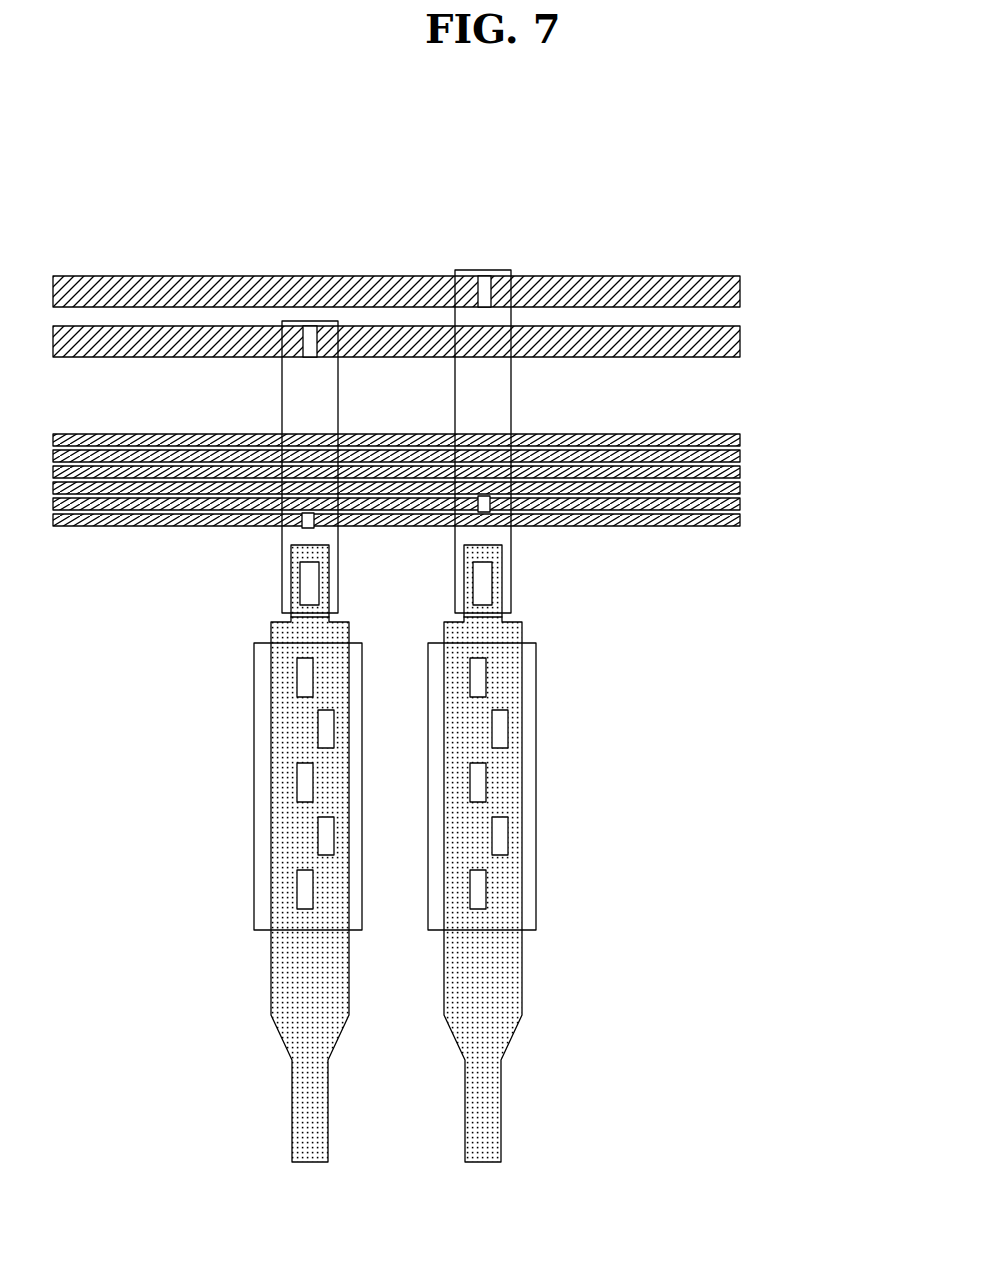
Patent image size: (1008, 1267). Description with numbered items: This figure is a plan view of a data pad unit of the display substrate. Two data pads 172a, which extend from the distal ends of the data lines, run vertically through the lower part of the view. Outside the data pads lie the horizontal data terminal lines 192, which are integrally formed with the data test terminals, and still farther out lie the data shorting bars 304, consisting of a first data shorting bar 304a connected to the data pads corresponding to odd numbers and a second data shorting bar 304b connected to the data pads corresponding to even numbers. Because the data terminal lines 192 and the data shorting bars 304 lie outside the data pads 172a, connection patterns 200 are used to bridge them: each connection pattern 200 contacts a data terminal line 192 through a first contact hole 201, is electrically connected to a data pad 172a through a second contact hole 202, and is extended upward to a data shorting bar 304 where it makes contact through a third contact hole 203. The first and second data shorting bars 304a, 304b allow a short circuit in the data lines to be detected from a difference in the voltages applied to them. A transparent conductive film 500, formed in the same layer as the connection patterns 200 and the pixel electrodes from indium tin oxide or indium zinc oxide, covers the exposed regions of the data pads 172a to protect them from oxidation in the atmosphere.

The data pad 172a is at (458, 1013).
The data terminal line 192 is at (680, 528).
The connection pattern 200 is at (333, 559).
The first contact hole 201 is at (479, 505).
The second contact hole 202 is at (480, 587).
The third contact hole 203 is at (310, 334).
The data shorting bar 304 is at (485, 317).
The first data shorting bar 304a is at (742, 340).
The second data shorting bar 304b is at (742, 290).
The transparent conductive film 500 is at (453, 779).